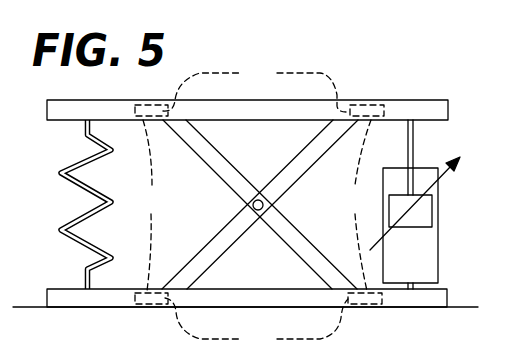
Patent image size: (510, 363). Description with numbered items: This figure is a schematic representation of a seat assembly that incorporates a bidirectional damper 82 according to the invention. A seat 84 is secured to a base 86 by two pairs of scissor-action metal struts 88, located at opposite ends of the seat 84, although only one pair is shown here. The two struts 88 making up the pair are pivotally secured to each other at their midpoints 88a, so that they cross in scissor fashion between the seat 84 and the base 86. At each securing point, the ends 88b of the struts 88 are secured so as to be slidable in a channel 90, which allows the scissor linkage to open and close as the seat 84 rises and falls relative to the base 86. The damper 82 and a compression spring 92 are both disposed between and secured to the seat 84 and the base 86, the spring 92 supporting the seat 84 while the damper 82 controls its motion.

The bidirectional damper 82 is at (432, 262).
The seat 84 is at (423, 108).
The base 86 is at (398, 303).
The scissor-action metal struts 88 is at (315, 262).
The midpoints 88a is at (258, 199).
The ends 88b is at (259, 206).
The channel 90 is at (255, 205).
The compression spring 92 is at (88, 268).